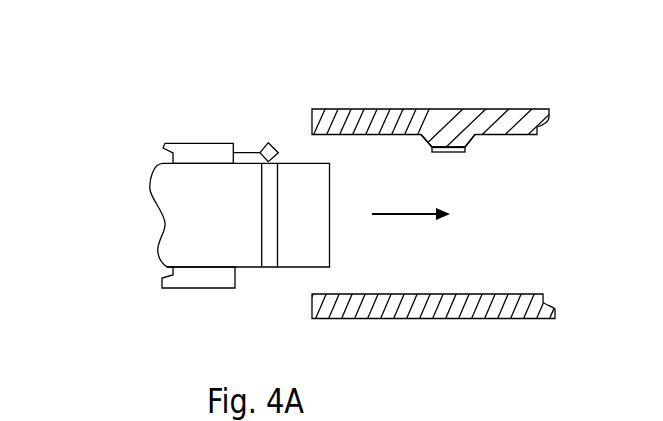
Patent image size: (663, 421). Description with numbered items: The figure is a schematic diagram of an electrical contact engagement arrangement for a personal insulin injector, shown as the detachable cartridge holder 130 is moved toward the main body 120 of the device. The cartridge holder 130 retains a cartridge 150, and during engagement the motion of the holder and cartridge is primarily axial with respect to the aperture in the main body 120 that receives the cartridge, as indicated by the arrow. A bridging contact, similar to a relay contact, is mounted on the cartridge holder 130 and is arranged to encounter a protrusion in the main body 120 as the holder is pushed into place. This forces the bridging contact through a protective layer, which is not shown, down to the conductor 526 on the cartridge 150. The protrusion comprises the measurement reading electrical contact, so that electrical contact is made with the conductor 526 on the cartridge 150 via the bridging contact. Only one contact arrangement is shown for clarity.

The main body 120 is at (463, 319).
The detachable cartridge holder 130 is at (182, 143).
The cartridge 150 is at (160, 238).
The conductor 526 is at (267, 268).